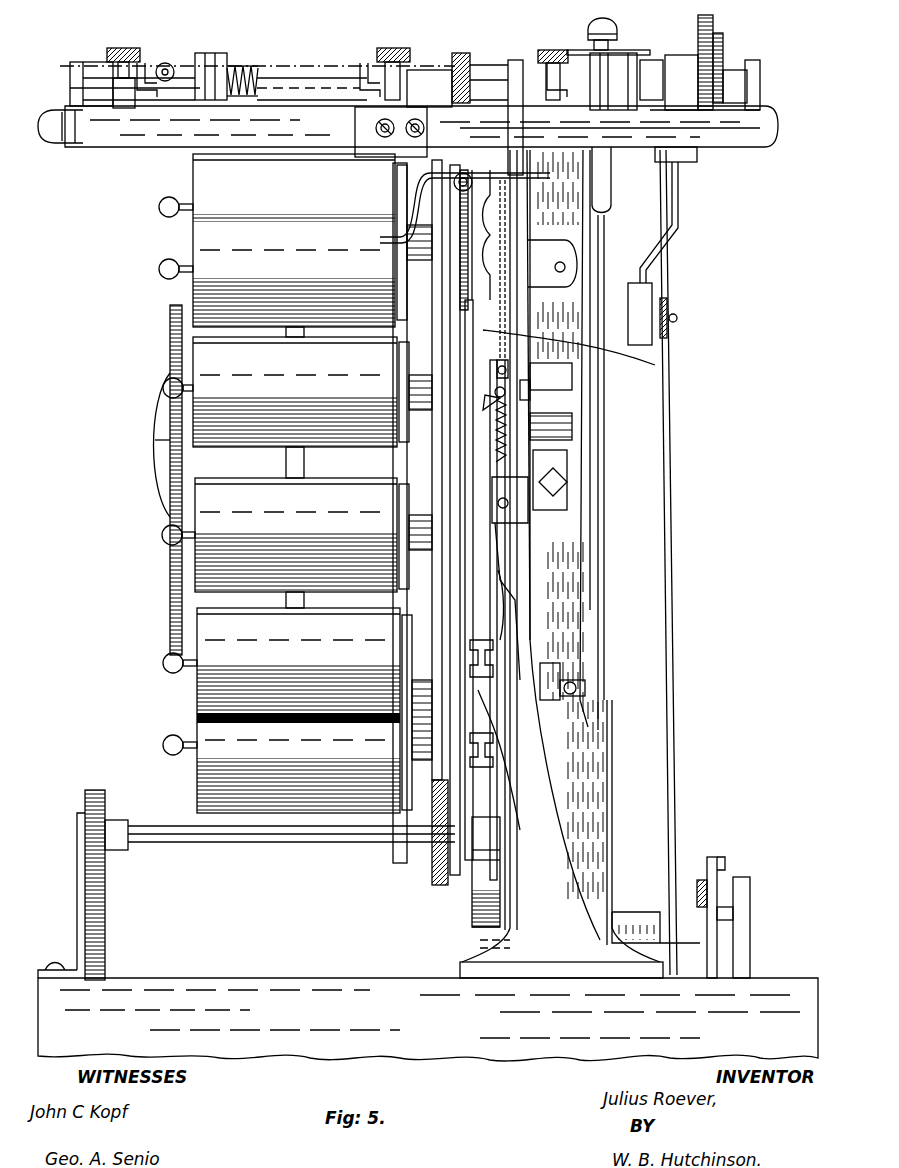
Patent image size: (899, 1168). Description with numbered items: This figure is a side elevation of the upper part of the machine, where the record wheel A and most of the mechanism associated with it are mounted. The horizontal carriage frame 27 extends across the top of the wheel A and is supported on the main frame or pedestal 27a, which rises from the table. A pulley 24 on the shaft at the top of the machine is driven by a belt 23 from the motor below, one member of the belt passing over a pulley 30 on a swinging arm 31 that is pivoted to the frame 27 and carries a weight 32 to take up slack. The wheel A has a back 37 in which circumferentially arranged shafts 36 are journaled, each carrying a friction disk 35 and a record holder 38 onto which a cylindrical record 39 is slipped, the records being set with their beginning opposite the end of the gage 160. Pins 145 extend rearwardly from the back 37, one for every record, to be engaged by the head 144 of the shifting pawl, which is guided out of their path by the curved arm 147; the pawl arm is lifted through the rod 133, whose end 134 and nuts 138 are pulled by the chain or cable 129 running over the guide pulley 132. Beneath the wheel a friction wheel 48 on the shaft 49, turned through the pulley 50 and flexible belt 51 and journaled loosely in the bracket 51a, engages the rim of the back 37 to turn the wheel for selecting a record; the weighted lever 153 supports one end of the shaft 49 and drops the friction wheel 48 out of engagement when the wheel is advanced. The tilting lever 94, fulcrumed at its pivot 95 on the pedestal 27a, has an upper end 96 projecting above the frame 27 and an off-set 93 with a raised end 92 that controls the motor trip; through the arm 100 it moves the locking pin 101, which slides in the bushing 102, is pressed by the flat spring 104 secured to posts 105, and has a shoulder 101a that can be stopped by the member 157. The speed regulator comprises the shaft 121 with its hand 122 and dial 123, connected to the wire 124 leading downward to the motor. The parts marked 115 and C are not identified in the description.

The carriage frame 27 is at (72, 98).
The spring 115 is at (243, 68).
The thumb screw C is at (268, 73).
The shaft 121 is at (603, 20).
The hand 122 is at (566, 50).
The dial 123 is at (633, 53).
The pulley 24 is at (655, 60).
The guide pulley 132 is at (538, 196).
The gage 160 is at (405, 224).
The upper end of tilting lever 96 is at (603, 213).
The fulcrum 95 is at (565, 267).
The swinging arm 31 is at (680, 230).
The weight 32 is at (645, 295).
The pulley 30 is at (668, 308).
The shafts 36 is at (410, 300).
The friction disks 35 is at (470, 292).
The pins 145 is at (500, 340).
The back of record wheel 37 is at (435, 340).
The rod 133 is at (489, 359).
The chain or cable 129 is at (655, 365).
The posts 105 is at (572, 375).
The end of tilting arm 134 is at (530, 390).
The curved arm 147 is at (510, 420).
The head of pawl 144 is at (515, 465).
The wire 124 is at (595, 478).
The nuts 138 is at (530, 513).
The record holder 38 is at (420, 432).
The main frame or pedestal 27a is at (535, 567).
The flat spring 104 is at (590, 605).
The lower end of lever 157 is at (500, 595).
The shoulder 101a is at (490, 665).
The bushing or bearing 102 is at (555, 662).
The arm 100 is at (585, 682).
The pin 101 is at (578, 690).
The tilting lever 94 is at (580, 785).
The belt 23 is at (673, 822).
The raised end 92 is at (700, 880).
The pulley 50 is at (108, 855).
The shaft 49 is at (290, 843).
The cylindrical records 39 is at (355, 815).
The friction wheel 48 is at (432, 888).
The off-set 93 is at (642, 912).
The weighted lever 153 is at (478, 930).
The bracket 51a is at (82, 935).
The flexible belt 51 is at (105, 925).
The record wheel A is at (157, 480).